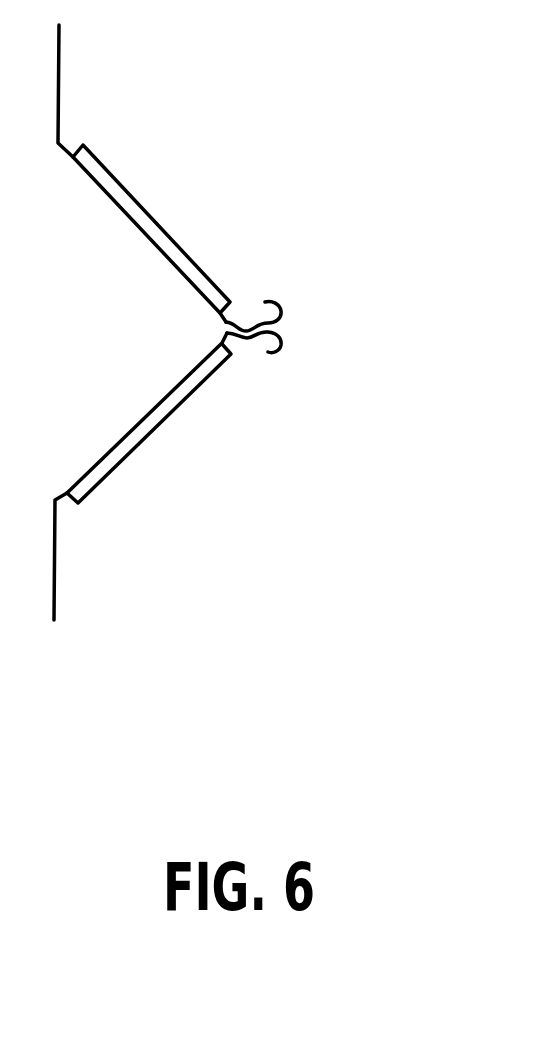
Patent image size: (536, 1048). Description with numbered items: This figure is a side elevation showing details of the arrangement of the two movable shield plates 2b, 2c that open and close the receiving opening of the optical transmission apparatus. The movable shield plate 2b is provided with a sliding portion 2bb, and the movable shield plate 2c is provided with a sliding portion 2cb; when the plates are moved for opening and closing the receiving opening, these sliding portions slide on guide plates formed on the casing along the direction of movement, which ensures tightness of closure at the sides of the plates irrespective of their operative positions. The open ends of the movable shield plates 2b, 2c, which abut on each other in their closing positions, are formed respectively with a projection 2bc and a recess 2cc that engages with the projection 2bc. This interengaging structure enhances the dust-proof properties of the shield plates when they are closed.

The movable shield plate 2b is at (123, 255).
The sliding portion 2bb is at (153, 237).
The projection 2bc is at (250, 317).
The movable shield plate 2c is at (115, 427).
The sliding portion 2cb is at (165, 411).
The recess 2cc is at (245, 340).